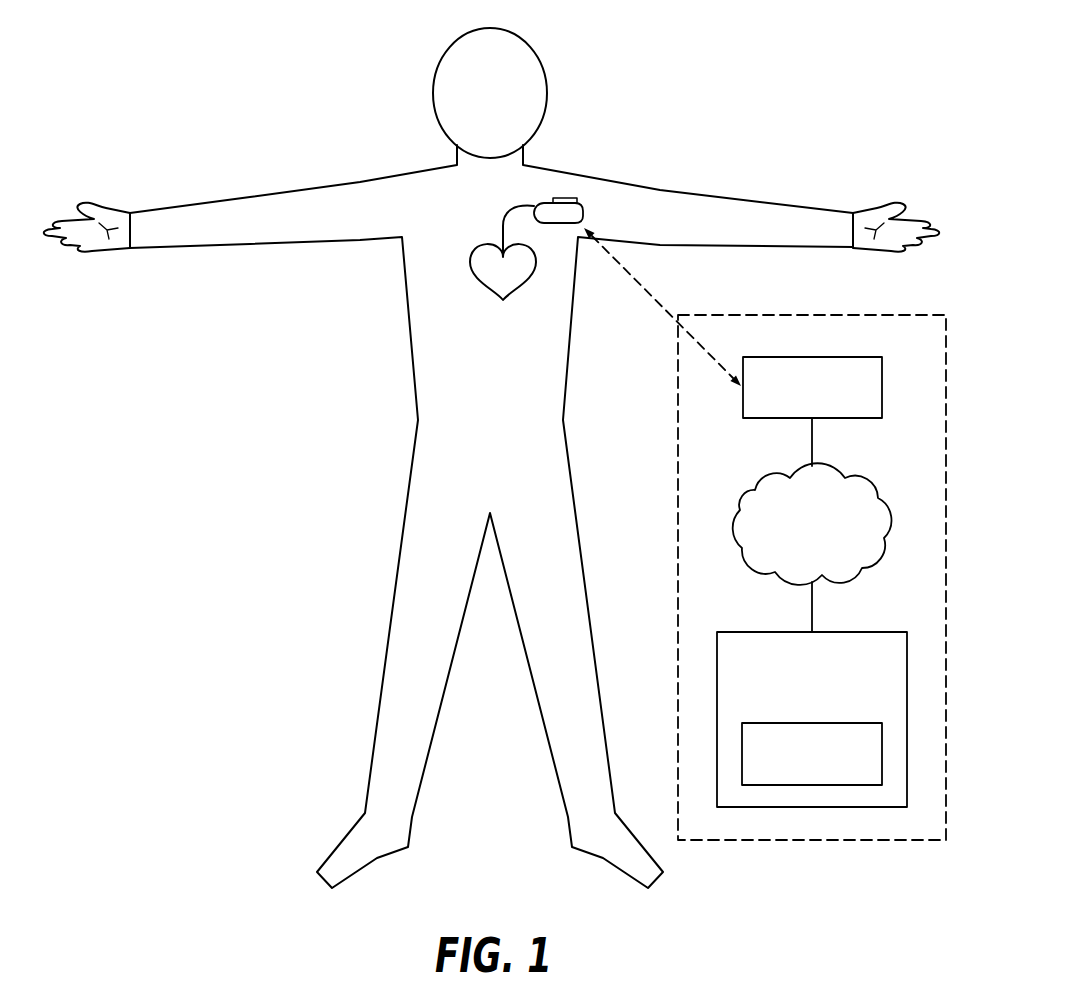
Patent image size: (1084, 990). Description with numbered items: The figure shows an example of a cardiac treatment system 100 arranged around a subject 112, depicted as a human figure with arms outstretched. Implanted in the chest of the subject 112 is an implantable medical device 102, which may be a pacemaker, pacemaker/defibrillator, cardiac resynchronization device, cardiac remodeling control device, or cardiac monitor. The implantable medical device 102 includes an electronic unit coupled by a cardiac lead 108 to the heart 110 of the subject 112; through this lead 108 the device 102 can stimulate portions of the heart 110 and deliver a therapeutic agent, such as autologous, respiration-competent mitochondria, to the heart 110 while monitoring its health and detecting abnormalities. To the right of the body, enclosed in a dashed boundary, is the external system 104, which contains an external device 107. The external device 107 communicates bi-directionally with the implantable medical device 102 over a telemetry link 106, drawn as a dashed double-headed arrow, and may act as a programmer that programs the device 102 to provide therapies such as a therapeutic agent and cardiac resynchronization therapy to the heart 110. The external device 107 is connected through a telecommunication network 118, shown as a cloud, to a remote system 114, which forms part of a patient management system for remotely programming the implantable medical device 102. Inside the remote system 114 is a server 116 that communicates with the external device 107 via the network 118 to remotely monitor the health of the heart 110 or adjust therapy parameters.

The cardiac treatment system 100 is at (824, 46).
The implantable medical device 102 is at (562, 197).
The external system 104 is at (812, 315).
The telemetry link 106 is at (656, 300).
The external device 107 is at (812, 357).
The cardiac lead 108 is at (512, 210).
The heart 110 is at (480, 285).
The subject 112 is at (408, 322).
The remote system 114 is at (838, 632).
The server 116 is at (812, 723).
The telecommunication network 118 is at (853, 478).